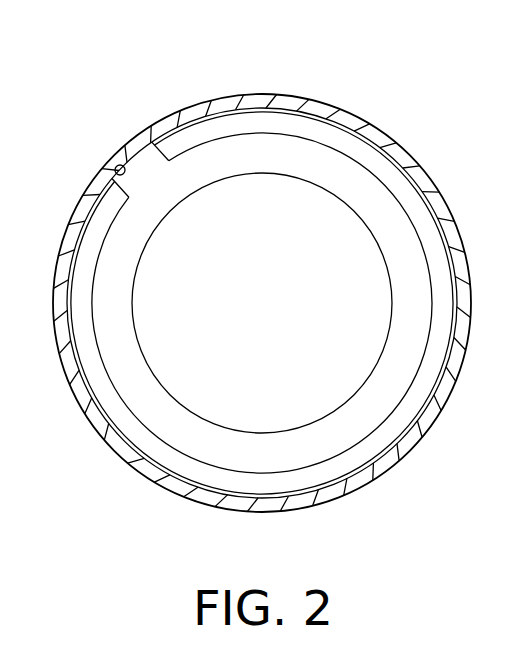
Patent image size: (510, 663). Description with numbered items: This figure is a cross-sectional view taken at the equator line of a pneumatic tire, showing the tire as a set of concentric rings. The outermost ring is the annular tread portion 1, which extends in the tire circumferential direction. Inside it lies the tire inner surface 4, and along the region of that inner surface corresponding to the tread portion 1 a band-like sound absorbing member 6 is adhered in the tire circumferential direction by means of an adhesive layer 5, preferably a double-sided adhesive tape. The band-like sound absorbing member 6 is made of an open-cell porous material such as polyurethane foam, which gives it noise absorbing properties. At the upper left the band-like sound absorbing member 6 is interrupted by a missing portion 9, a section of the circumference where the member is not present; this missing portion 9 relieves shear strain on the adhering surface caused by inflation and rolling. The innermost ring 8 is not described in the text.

The tread portion 1 is at (315, 103).
The tire inner surface 4 is at (112, 164).
The adhesive layer 5 is at (220, 98).
The band-like sound absorbing member 6 is at (266, 120).
The inner ring 8 is at (358, 178).
The missing portion 9 is at (150, 173).